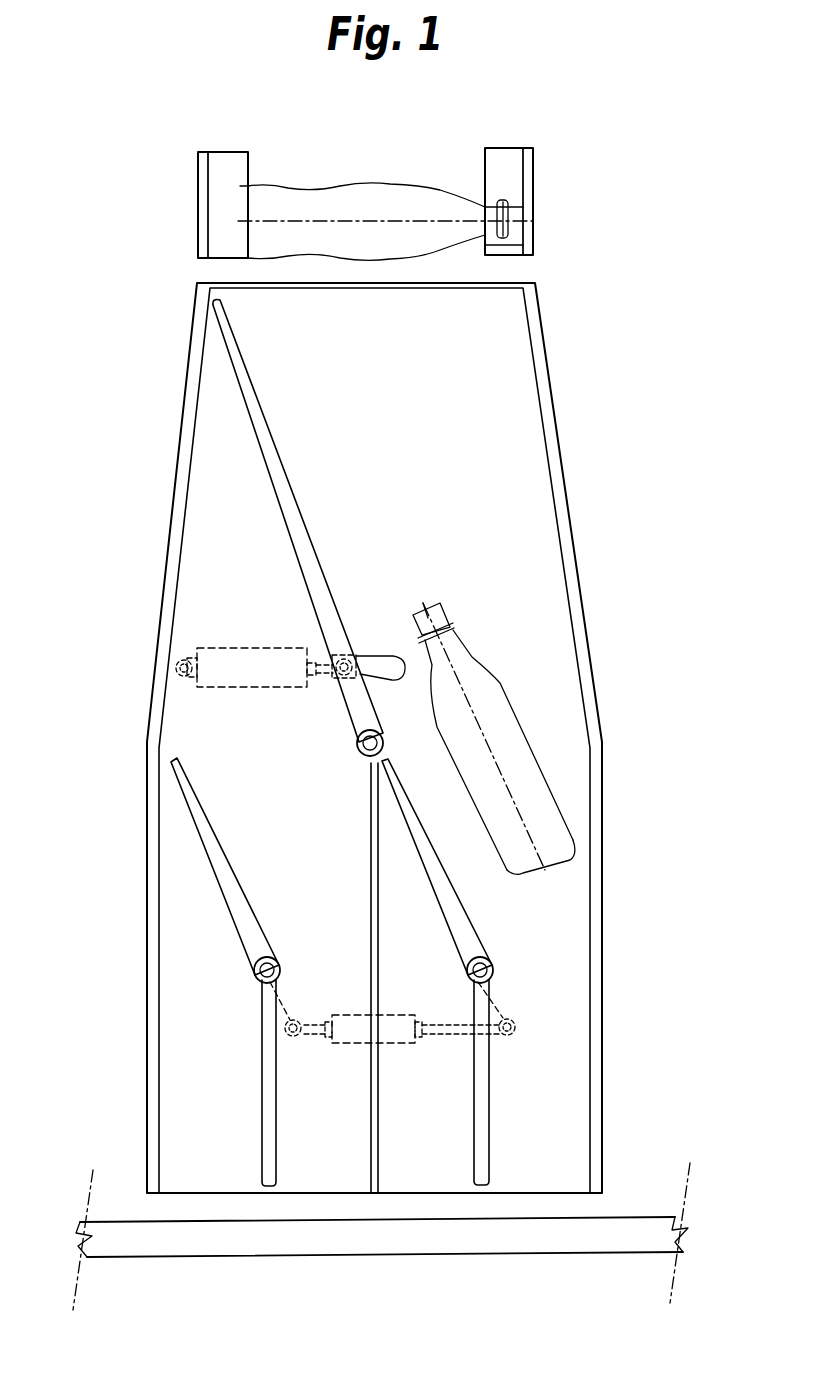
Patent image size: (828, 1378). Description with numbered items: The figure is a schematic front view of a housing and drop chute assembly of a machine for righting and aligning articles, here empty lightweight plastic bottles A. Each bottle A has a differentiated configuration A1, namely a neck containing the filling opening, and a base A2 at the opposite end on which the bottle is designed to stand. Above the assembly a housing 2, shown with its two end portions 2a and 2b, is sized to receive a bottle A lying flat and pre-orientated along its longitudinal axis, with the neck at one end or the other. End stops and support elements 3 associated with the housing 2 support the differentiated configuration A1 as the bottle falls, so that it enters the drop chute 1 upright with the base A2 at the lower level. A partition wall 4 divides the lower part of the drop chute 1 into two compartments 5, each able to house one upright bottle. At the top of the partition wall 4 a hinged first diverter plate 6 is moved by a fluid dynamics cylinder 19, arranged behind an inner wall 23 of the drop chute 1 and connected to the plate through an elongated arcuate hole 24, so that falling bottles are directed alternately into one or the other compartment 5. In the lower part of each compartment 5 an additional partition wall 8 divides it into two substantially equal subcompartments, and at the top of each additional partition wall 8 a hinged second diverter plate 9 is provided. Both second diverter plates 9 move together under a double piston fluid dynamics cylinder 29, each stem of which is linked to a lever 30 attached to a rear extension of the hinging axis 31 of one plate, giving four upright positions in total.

The drop chute 1 is at (348, 395).
The housing 2 is at (305, 88).
The right holding block 2a is at (533, 180).
The left holding block 2b is at (203, 200).
The end stops and support elements 3 is at (238, 160).
The partition wall 4 is at (368, 850).
The compartments 5 is at (280, 915).
The first diverter plate 6 is at (292, 515).
The additional partition walls 8 is at (268, 1117).
The second diverter plates 9 is at (207, 833).
The fluid dynamics cylinder 19 is at (235, 653).
The inner wall 23 is at (200, 570).
The elongated arcuate hole 24 is at (380, 660).
The double piston fluid dynamics cylinder 29 is at (388, 1042).
The lever 30 is at (293, 997).
The hinging axis 31 is at (258, 972).
The bottle A is at (370, 193).
The differentiated configuration A1 is at (500, 207).
The base A2 is at (267, 192).